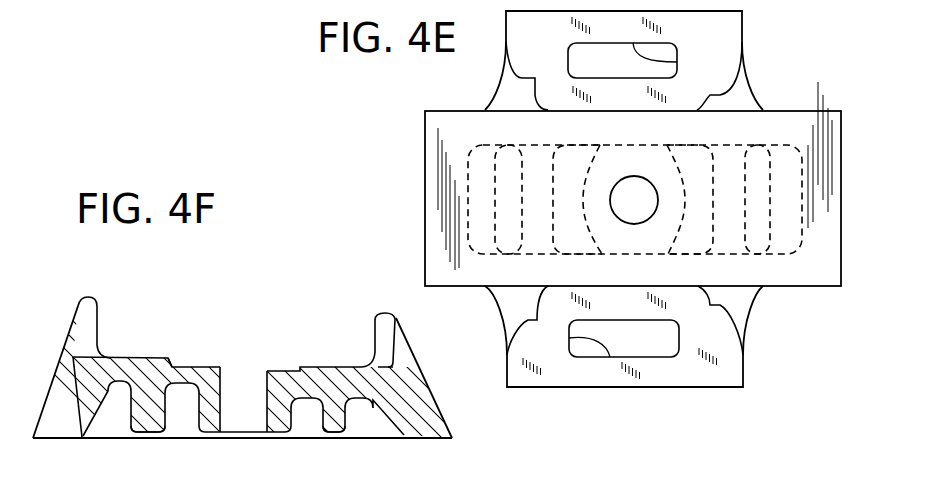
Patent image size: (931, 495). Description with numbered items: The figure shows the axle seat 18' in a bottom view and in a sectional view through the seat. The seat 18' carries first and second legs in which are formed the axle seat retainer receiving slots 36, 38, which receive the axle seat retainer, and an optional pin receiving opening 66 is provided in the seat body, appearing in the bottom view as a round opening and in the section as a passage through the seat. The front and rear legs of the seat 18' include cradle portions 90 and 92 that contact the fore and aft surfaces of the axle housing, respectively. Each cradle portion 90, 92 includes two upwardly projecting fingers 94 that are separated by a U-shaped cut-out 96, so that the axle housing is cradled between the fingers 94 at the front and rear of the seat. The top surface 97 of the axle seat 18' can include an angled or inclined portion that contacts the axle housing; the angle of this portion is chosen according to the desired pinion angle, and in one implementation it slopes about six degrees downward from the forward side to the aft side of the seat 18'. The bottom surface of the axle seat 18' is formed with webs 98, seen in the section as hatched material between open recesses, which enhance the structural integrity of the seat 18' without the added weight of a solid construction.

In FIG. 4E, the axle seat 18' is at (577, 199).
In FIG. 4F, the axle seat 18' is at (250, 343).
In FIG. 4E, the axle seat retainer receiving slot 36 is at (677, 62).
In FIG. 4E, the axle seat retainer receiving slot 38 is at (569, 338).
In FIG. 4E, the pin receiving opening 66 is at (615, 197).
In FIG. 4F, the pin receiving opening 66 is at (224, 381).
In FIG. 4F, the cradle portion 90 is at (384, 315).
In FIG. 4F, the cradle portion 92 is at (93, 300).
In FIG. 4F, the upwardly projecting fingers 94 is at (52, 381).
In FIG. 4F, the U-shaped cut-out 96 is at (100, 352).
In FIG. 4F, the top surface 97 is at (170, 358).
In FIG. 4F, the webs 98 is at (155, 437).